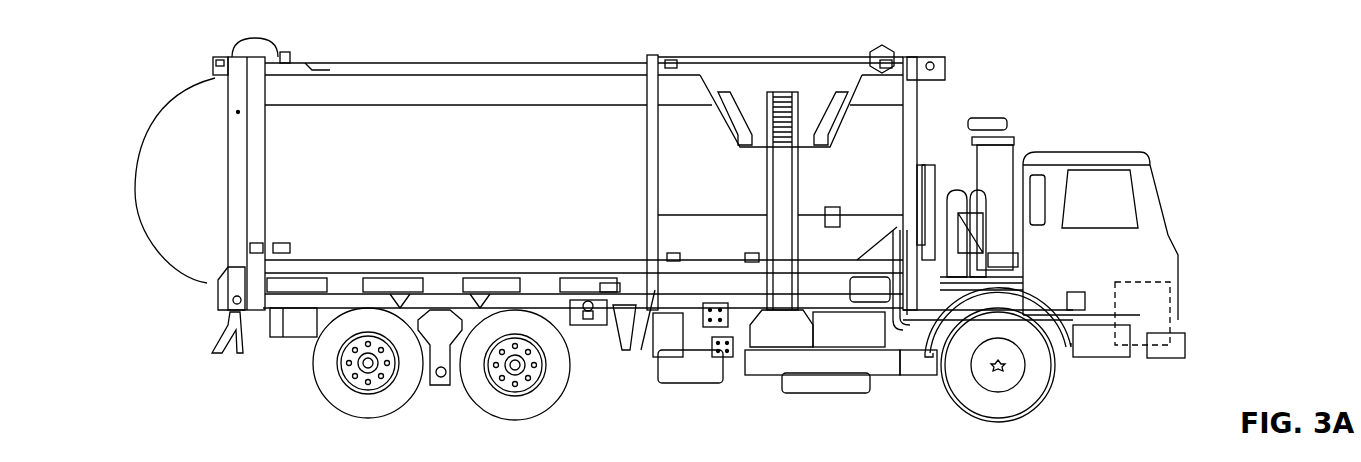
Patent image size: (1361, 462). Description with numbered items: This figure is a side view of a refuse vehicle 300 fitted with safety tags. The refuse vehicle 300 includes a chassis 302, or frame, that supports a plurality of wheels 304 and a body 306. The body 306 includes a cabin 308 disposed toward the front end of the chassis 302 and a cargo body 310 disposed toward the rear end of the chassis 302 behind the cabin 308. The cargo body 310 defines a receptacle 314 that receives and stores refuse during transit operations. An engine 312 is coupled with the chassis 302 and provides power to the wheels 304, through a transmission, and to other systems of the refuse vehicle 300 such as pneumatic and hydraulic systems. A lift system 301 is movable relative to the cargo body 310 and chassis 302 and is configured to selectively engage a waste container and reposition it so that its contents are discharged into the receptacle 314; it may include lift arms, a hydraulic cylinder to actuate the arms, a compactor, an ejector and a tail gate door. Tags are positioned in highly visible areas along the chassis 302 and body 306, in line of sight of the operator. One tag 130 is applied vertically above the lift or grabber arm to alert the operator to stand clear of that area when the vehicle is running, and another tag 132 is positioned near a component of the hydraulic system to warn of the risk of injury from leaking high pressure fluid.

The refuse vehicle 300 is at (124, 52).
The lift system 301 is at (783, 184).
The chassis 302 is at (303, 328).
The wheels 304 is at (497, 398).
The body 306 is at (563, 92).
The cabin 308 is at (1107, 152).
The cargo body 310 is at (350, 88).
The engine 312 is at (1130, 345).
The receptacle 314 is at (466, 197).
The tag 130 is at (749, 255).
The tag 132 is at (908, 205).